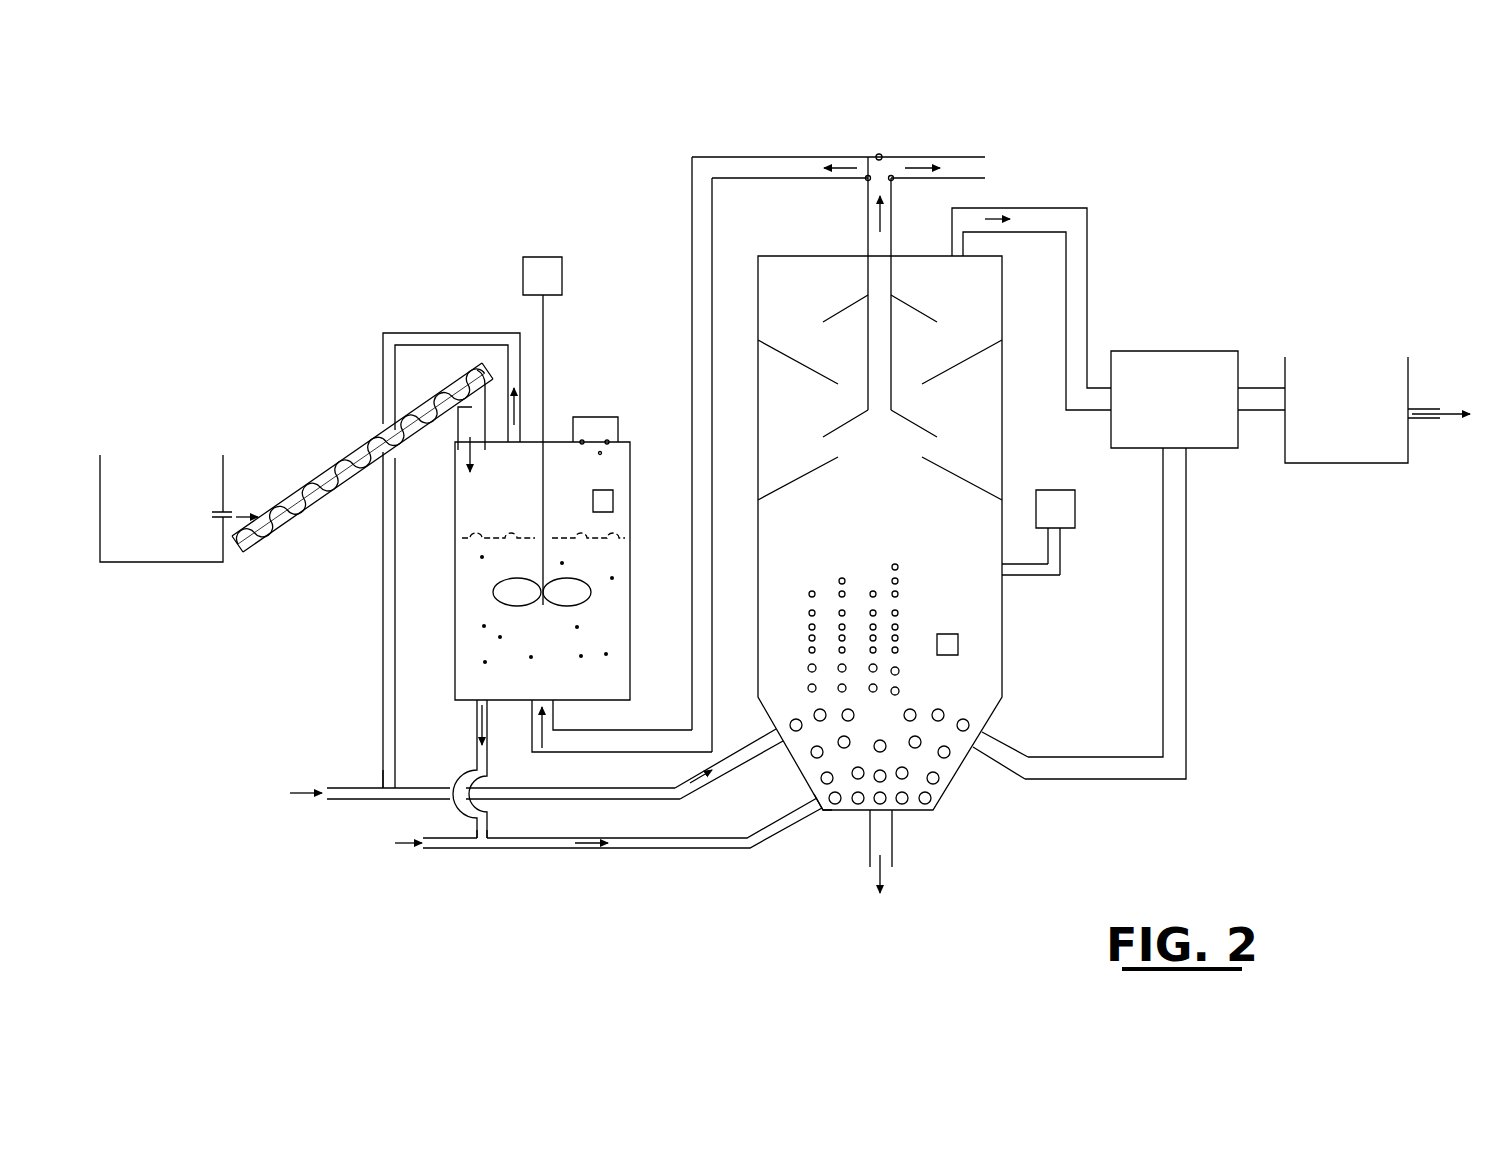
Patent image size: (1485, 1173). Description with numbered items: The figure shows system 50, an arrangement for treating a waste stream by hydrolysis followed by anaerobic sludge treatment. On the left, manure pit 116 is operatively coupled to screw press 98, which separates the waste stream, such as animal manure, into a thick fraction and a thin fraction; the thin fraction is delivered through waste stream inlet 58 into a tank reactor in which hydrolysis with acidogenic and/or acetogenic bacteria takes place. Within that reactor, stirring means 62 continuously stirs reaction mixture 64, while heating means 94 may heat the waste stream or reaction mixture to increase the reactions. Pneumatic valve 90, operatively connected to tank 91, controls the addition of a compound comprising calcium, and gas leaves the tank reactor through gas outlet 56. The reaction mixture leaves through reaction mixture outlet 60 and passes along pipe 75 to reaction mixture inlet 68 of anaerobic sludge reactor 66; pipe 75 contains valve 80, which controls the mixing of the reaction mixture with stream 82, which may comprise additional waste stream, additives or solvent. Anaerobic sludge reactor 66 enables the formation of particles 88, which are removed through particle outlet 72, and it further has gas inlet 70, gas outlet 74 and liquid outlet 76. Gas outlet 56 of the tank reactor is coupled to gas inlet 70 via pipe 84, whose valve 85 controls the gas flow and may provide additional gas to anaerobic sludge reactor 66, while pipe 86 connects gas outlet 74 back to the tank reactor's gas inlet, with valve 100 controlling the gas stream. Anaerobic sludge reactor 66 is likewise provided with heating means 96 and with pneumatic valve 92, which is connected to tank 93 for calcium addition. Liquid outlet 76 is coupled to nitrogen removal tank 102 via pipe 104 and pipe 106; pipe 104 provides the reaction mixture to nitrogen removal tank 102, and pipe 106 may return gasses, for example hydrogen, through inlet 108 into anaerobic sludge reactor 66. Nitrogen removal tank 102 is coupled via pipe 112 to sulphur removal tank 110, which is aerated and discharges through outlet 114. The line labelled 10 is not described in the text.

The wash water return line 10 is at (553, 707).
The system 50 is at (196, 208).
The gas outlet 56 is at (518, 445).
The waste stream inlet 58 is at (467, 427).
The reaction mixture outlet 60 is at (477, 700).
The stirring means 62 is at (543, 268).
The reaction mixture 64 is at (603, 662).
The anaerobic sludge reactor 66 is at (983, 612).
The reaction mixture inlet 68 is at (817, 812).
The gas inlet 70 is at (760, 745).
The particle outlet 72 is at (890, 833).
The gas outlet 74 is at (868, 258).
The pipe 75 is at (633, 843).
The liquid outlet 76 is at (962, 257).
The valve 80 is at (477, 843).
The stream 82 is at (430, 843).
The pipe 84 is at (410, 795).
The valve 85 is at (383, 778).
The pipe 86 is at (700, 233).
The particles 88 is at (812, 594).
The pneumatic valve 90 is at (600, 455).
The tank 91 is at (597, 430).
The pneumatic valve 92 is at (1040, 575).
The tank 93 is at (1058, 505).
The heating means 94 is at (613, 500).
The heating means 96 is at (958, 645).
The screw press 98 is at (323, 468).
The valve 100 is at (879, 157).
The nitrogen removal tank 102 is at (1167, 365).
The pipe 104 is at (1050, 213).
The pipe 106 is at (1186, 565).
The inlet 108 is at (1018, 752).
The sulphur removal tank 110 is at (1372, 385).
The pipe 112 is at (1262, 395).
The outlet 114 is at (1440, 420).
The manure pit 116 is at (145, 543).